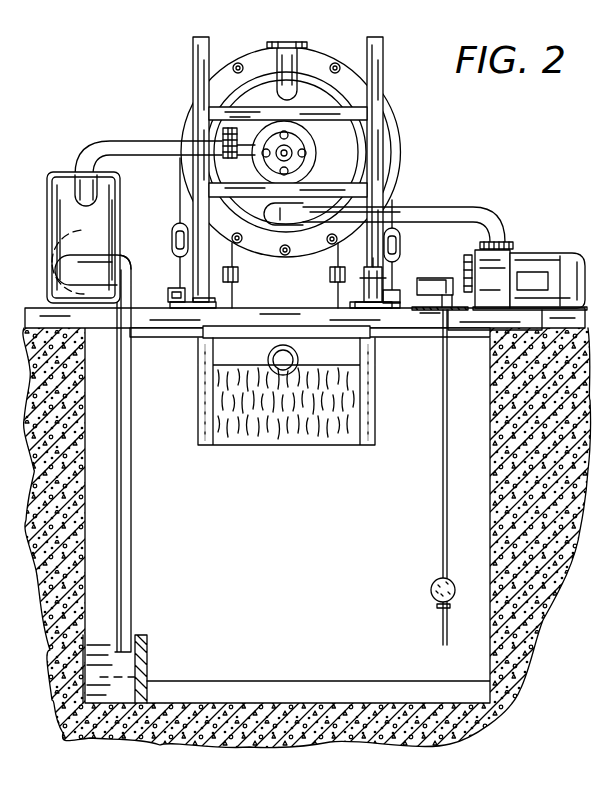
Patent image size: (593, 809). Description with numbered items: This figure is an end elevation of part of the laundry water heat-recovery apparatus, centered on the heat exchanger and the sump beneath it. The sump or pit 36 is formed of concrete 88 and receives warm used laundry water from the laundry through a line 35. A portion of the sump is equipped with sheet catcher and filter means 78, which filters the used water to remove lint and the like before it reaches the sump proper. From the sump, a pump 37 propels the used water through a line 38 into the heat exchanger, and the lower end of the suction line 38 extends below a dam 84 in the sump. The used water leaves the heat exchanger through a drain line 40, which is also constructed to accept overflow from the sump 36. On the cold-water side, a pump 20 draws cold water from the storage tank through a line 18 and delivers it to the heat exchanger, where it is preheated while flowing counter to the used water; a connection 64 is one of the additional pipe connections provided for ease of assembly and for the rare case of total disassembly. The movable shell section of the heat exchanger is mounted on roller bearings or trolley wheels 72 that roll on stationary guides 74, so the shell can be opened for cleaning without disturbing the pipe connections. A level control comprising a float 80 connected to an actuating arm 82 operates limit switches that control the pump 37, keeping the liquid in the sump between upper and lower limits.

The line 18 is at (422, 207).
The pump 20 is at (530, 252).
The line 35 is at (276, 355).
The sump or pit 36 is at (300, 547).
The pump 37 is at (47, 247).
The line 38 is at (157, 141).
The drain line 40 is at (273, 60).
The connection 64 is at (307, 45).
The roller bearings or trolley wheels 72 is at (364, 283).
The guides 74 is at (360, 291).
The sheet catcher and filter means 78 is at (343, 409).
The float 80 is at (433, 590).
The actuating arm 82 is at (443, 492).
The dam 84 is at (147, 643).
The concrete 88 is at (530, 652).